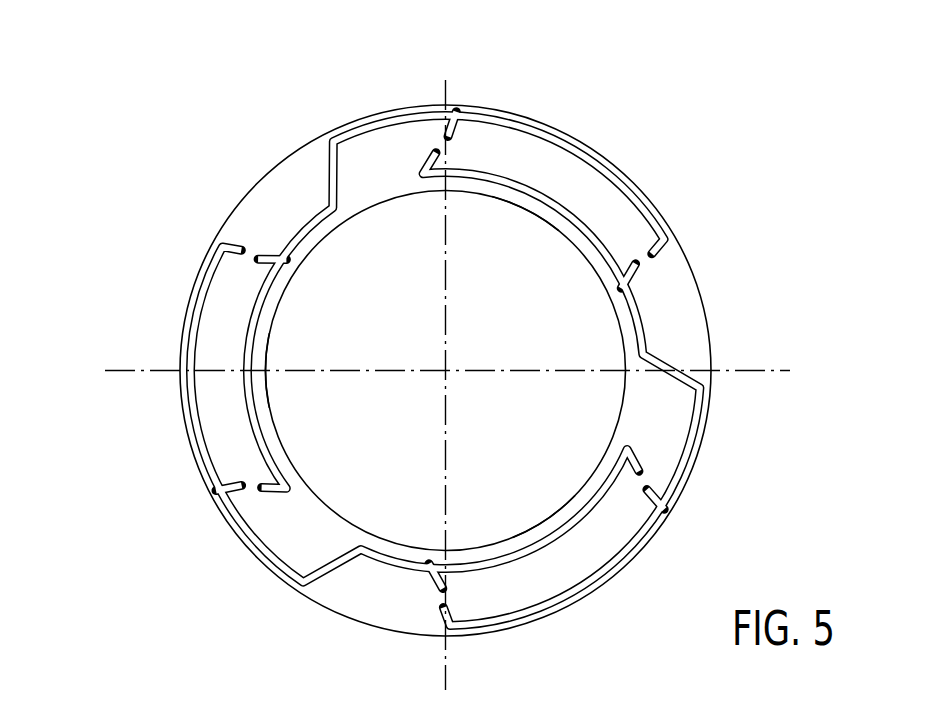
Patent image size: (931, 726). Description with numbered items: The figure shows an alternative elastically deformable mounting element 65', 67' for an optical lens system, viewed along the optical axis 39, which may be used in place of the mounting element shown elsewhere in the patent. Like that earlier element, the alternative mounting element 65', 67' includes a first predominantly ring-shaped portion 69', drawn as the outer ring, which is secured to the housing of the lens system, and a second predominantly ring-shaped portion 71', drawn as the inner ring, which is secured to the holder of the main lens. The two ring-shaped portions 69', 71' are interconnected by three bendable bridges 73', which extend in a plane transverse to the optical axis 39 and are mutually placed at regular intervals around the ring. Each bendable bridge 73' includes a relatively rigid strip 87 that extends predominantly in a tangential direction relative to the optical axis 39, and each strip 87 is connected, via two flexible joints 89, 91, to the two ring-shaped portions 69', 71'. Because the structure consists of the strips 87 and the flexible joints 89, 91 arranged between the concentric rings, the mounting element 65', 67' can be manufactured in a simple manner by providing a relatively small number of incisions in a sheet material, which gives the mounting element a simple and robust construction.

The optical axis 39 is at (450, 380).
The alternative mounting element 65' is at (426, 378).
The alternative mounting element 67' is at (409, 370).
The first predominantly ring-shaped portion 69' is at (412, 370).
The second predominantly ring-shaped portion 71' is at (446, 371).
The bendable bridge 73' is at (420, 367).
The relatively rigid strip 87 is at (435, 378).
The flexible joint 89 is at (253, 253).
The flexible joint 91 is at (440, 150).